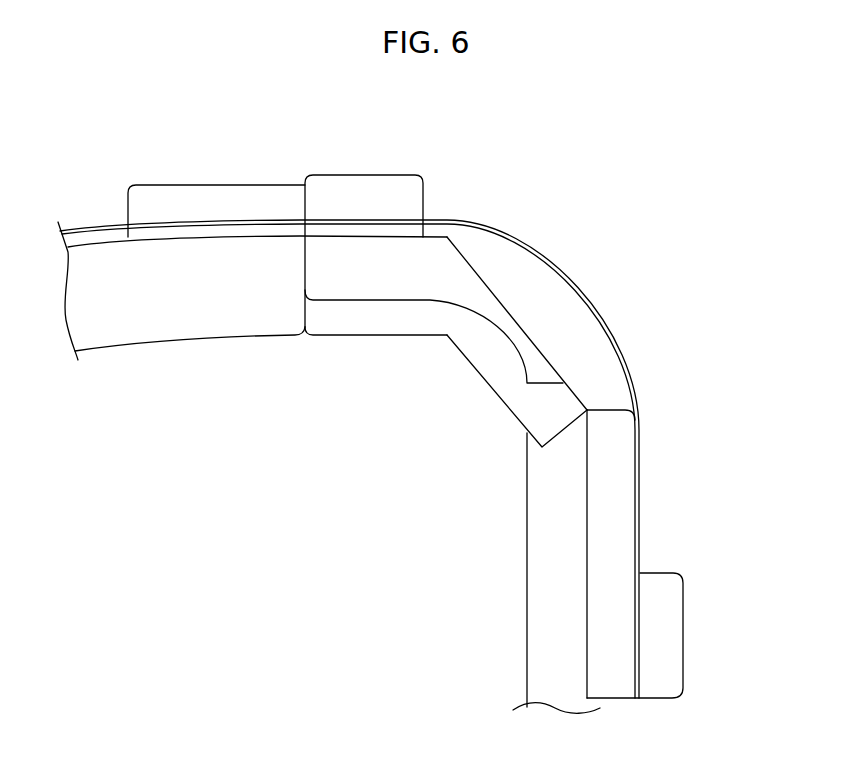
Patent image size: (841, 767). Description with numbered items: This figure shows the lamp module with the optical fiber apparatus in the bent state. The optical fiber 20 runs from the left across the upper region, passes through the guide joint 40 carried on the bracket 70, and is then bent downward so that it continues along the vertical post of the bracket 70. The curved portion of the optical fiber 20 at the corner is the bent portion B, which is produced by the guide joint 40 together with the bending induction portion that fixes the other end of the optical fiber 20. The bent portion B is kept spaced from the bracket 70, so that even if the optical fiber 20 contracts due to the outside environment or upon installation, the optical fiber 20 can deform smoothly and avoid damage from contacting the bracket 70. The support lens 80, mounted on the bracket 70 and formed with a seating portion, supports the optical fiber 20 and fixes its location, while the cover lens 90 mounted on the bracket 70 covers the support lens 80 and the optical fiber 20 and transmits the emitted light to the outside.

The optical fiber 20 is at (93, 224).
The guide joint 40 is at (367, 197).
The bent portion B is at (566, 275).
The cover lens 90 is at (130, 327).
The bracket 70 is at (543, 575).
The support lens 80 is at (674, 629).